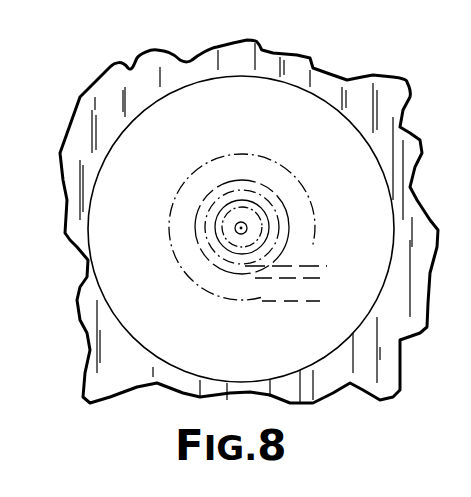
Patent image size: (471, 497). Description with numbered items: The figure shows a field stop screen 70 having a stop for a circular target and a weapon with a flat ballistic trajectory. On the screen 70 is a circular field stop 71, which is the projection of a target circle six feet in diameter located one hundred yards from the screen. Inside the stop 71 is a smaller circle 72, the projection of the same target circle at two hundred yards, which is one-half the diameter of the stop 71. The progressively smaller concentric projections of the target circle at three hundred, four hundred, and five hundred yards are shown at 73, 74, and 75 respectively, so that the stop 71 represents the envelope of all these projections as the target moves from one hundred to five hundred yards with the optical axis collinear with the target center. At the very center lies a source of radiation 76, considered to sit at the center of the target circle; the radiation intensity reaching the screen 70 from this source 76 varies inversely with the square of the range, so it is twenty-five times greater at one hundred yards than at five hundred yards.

The field stop screen 70 is at (130, 80).
The circular field stop 71 is at (113, 148).
The circle 72 is at (182, 183).
The projection of target circle at 300 yards 73 is at (195, 207).
The projection of target circle at 400 yards 74 is at (205, 234).
The projection of target circle at 500 yards 75 is at (221, 247).
The source of radiation 76 is at (235, 229).